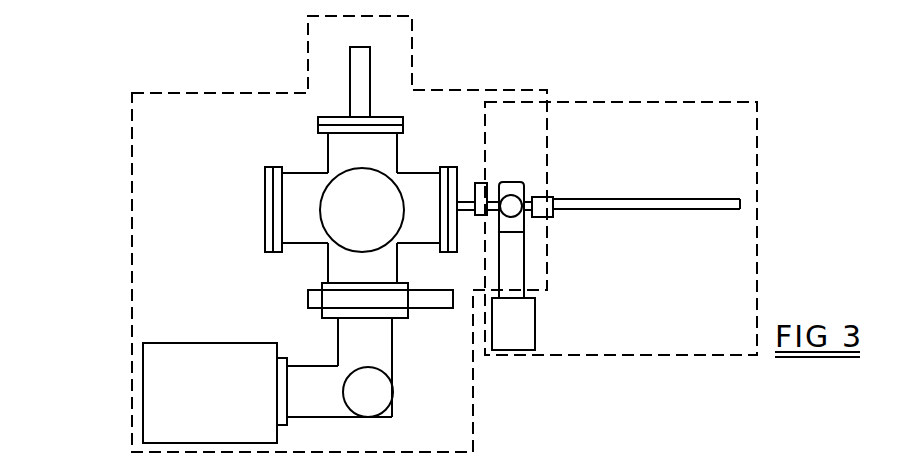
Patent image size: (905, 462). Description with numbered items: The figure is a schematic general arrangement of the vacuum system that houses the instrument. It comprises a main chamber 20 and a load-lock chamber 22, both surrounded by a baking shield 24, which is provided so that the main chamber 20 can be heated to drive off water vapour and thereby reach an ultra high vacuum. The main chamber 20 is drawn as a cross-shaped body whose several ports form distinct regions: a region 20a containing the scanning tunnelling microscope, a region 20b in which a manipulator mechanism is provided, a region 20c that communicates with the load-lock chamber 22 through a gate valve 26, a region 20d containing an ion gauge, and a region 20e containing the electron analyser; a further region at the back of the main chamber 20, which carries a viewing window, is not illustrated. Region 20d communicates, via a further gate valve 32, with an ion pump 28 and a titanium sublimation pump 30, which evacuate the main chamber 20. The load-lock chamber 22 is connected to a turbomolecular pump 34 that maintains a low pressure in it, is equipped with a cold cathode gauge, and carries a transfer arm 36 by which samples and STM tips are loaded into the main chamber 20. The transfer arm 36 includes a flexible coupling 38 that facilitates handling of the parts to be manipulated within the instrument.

The main chamber 20 is at (322, 146).
The region containing the scanning tunnelling microscope 20a is at (292, 196).
The region in which a manipulator mechanism is provided 20b is at (383, 157).
The region communicating with the load-lock chamber 20c is at (425, 183).
The region containing an ion gauge 20d is at (350, 268).
The region containing the electron analyser 20e is at (336, 218).
The load-lock chamber 22 is at (507, 187).
The baking shield 24 is at (476, 438).
The gate valve 26 is at (483, 187).
The ion pump 28 is at (167, 389).
The titanium sublimation pump 30 is at (372, 392).
The further gate valve 32 is at (432, 297).
The turbomolecular pump 34 is at (517, 327).
The transfer arm 36 is at (742, 203).
The flexible coupling 38 is at (553, 216).